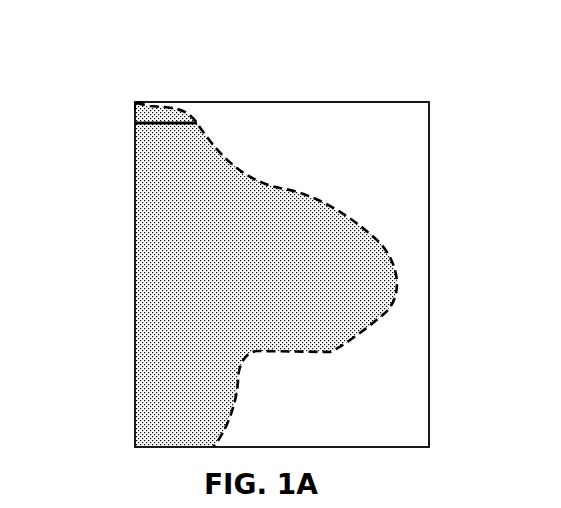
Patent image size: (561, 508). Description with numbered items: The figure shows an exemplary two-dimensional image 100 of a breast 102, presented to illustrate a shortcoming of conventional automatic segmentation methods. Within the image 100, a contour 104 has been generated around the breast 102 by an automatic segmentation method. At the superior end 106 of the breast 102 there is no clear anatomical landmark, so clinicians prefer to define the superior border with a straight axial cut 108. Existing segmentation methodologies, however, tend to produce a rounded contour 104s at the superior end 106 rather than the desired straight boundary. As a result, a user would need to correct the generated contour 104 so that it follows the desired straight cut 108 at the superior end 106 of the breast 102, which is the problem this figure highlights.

The two-dimensional image 100 is at (429, 133).
The breast 102 is at (163, 347).
The contour 104 is at (358, 341).
The rounded contour 104s is at (143, 100).
The superior end 106 is at (163, 85).
The axial cut 108 is at (162, 122).